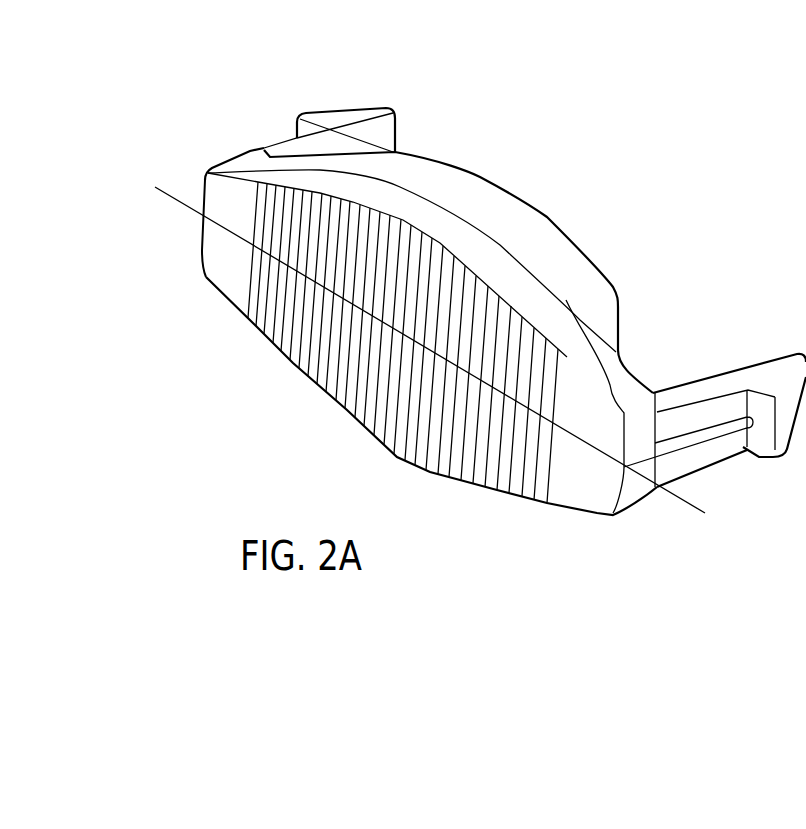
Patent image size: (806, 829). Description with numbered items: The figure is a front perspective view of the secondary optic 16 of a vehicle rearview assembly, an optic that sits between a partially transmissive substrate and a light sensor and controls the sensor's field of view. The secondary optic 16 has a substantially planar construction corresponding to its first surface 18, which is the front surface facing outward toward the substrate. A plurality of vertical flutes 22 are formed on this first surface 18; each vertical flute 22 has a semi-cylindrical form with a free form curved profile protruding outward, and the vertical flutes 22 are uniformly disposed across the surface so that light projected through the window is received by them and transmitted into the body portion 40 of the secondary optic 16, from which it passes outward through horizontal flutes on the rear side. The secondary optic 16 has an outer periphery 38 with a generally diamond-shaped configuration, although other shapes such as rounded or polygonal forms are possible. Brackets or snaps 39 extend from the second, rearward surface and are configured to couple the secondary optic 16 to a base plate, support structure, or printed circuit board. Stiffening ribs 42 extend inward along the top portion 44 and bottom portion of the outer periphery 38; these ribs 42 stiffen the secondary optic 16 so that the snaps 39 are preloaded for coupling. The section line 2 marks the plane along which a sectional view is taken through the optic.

The section line 2- 2 is at (155, 187).
The secondary optic 16 is at (633, 205).
The first surface 18 is at (592, 495).
The vertical flutes 22 is at (307, 357).
The outer periphery 38 is at (618, 380).
The snaps 39 is at (327, 122).
The body portion 40 is at (563, 323).
The stiffening ribs 42 is at (494, 193).
The top portion 44 is at (542, 283).